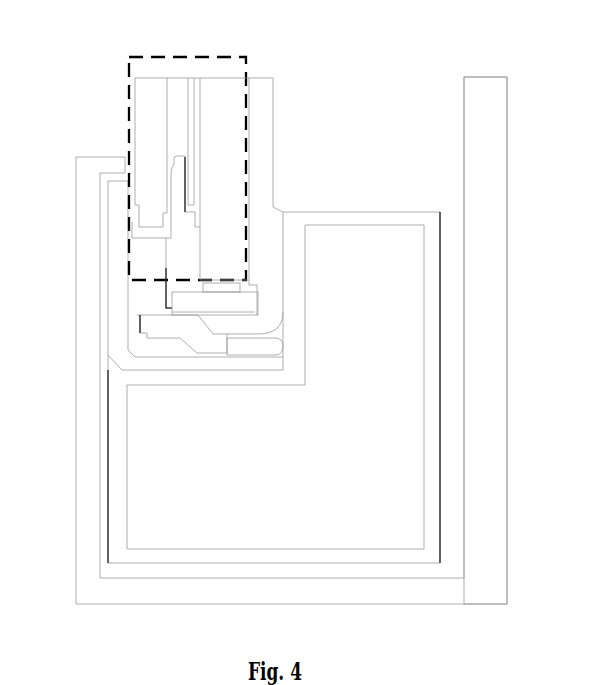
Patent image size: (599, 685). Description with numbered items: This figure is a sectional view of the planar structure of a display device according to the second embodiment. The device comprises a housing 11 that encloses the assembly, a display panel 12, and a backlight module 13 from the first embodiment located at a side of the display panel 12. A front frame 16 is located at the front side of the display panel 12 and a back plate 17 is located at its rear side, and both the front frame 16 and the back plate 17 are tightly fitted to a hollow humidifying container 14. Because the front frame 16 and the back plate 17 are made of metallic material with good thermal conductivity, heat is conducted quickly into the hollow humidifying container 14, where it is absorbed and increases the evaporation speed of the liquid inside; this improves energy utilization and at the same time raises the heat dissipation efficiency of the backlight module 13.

The housing 11 is at (486, 89).
The display panel 12 is at (212, 65).
The backlight module 13 is at (202, 303).
The hollow humidifying container 14 is at (428, 348).
The front frame 16 is at (117, 240).
The back plate 17 is at (247, 168).